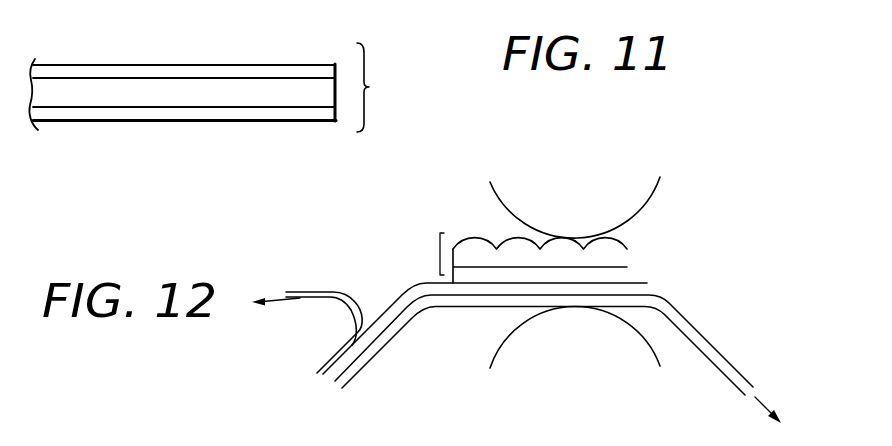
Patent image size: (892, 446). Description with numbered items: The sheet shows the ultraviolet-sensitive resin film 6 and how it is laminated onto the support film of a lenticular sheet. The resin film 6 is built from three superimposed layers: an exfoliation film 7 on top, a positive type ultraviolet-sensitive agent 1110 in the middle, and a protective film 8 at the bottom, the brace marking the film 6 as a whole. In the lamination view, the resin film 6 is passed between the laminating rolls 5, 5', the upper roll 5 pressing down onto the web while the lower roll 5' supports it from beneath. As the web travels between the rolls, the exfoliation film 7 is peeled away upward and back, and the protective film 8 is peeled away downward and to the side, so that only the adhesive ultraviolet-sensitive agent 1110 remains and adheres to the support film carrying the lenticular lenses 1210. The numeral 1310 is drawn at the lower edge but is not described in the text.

In FIG. 11, the ultraviolet-sensitive resin film 6 is at (227, 102).
In FIG. 12, the ultraviolet-sensitive resin film 6 is at (516, 331).
In FIG. 11, the exfoliation film 7 is at (182, 69).
In FIG. 12, the exfoliation film 7 is at (333, 292).
In FIG. 11, the positive type ultraviolet-sensitive agent 1110 is at (95, 98).
In FIG. 12, the positive type ultraviolet-sensitive agent 1110 is at (645, 288).
In FIG. 11, the protective film 8 is at (270, 110).
In FIG. 12, the protective film 8 is at (708, 346).
In FIG. 12, the laminating roll 5 is at (593, 209).
In FIG. 12, the laminating roll 5' is at (552, 337).
In FIG. 12, the lenticular lenses 1210 is at (440, 253).
In FIG. 12, the web section 1310 is at (334, 441).